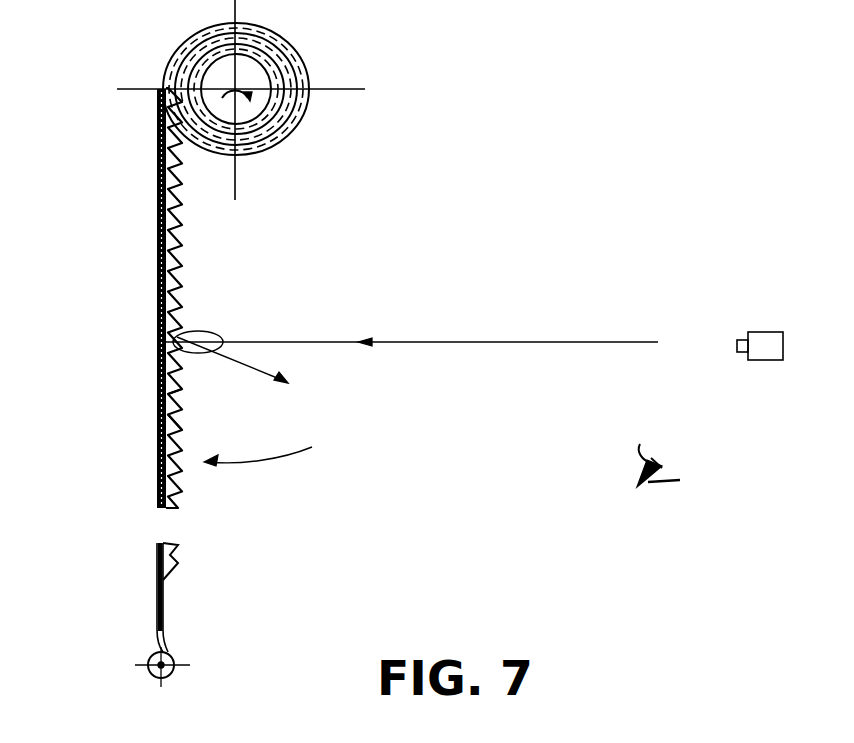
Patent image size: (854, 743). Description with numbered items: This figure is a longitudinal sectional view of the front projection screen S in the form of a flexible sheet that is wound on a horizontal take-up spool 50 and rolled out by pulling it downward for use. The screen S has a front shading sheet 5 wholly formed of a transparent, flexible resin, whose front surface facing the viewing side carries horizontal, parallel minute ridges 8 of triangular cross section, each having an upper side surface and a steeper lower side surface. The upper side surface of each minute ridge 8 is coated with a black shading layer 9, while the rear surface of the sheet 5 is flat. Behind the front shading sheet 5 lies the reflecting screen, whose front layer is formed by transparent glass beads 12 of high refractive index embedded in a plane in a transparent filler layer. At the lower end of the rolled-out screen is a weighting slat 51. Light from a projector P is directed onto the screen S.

The horizontal take-up spool 50 is at (262, 79).
The transparent glass beads 12 is at (157, 358).
The front shading sheet 5 is at (180, 232).
The minute ridges 8 is at (180, 397).
The black shading layer 9 is at (178, 437).
The light source P is at (765, 340).
The front projection screen S is at (340, 448).
The weighting slat 51 is at (173, 653).